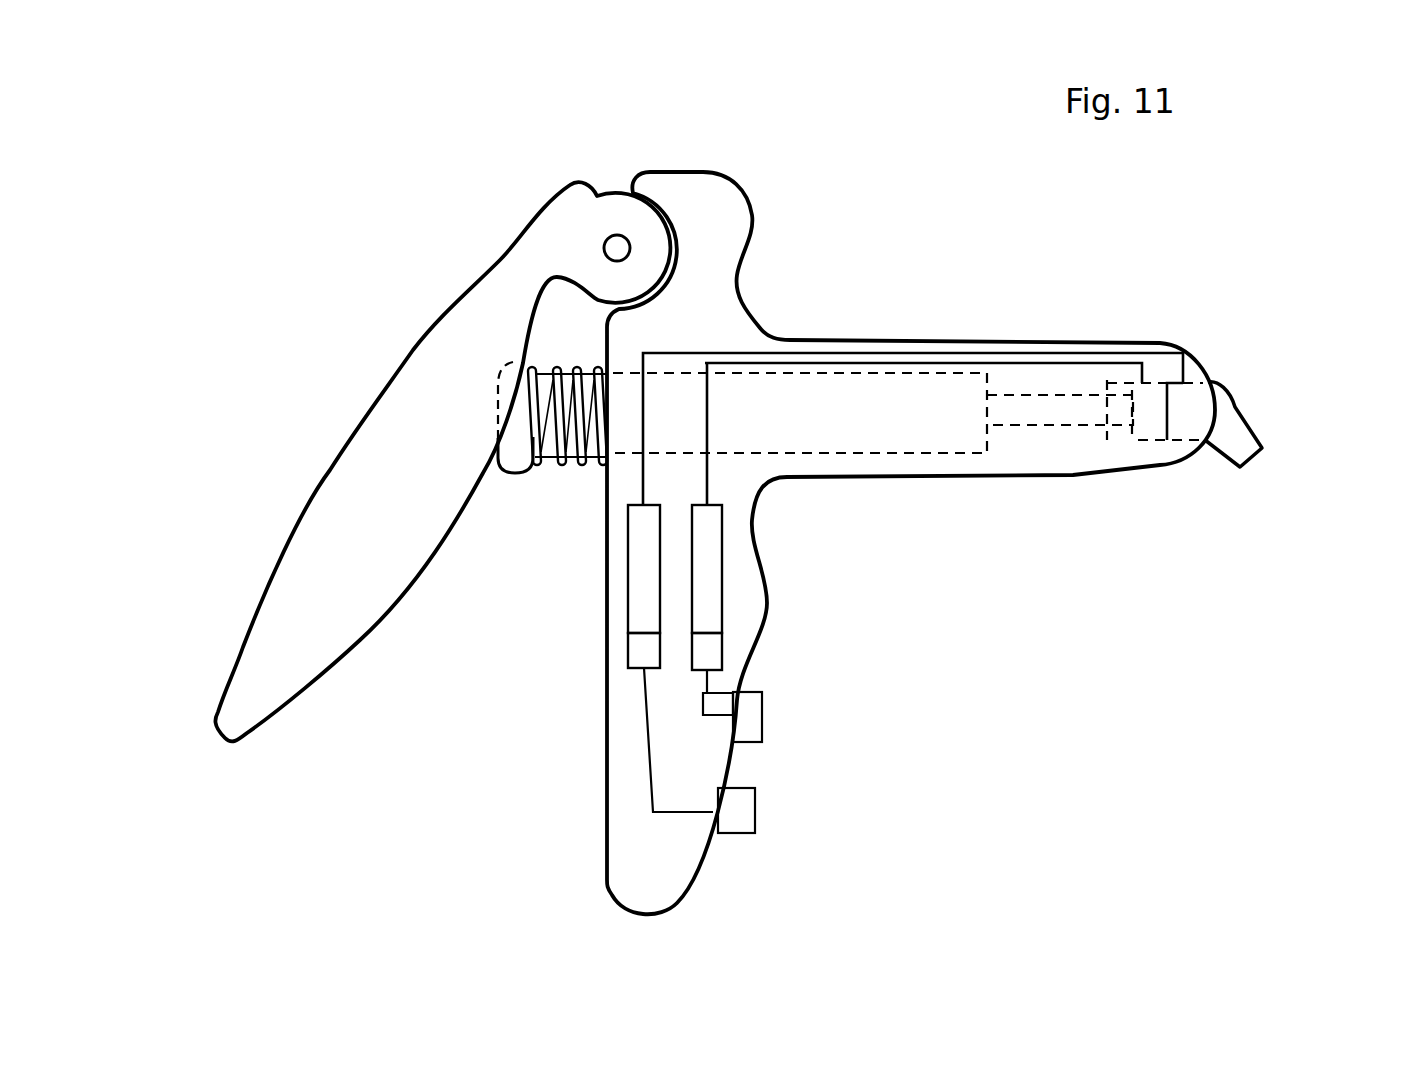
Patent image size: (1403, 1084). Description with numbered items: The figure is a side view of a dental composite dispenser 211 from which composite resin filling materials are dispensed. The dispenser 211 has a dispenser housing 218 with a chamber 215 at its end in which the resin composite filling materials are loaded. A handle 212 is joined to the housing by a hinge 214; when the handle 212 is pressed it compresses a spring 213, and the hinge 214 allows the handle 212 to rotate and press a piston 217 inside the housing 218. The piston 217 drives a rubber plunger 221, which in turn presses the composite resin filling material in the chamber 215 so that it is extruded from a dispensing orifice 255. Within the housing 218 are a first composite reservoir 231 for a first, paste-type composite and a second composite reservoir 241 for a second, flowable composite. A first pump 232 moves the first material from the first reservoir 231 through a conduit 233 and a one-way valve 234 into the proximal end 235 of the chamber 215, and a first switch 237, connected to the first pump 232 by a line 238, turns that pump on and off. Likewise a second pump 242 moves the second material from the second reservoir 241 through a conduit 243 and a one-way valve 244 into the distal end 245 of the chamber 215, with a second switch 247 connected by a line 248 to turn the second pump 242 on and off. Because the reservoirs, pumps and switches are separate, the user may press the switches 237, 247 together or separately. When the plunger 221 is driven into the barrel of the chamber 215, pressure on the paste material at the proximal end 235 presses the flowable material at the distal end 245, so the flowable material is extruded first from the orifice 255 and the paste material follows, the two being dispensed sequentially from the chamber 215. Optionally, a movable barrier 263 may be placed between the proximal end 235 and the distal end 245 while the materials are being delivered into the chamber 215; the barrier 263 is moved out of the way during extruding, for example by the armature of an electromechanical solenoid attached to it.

The dental composite dispenser 211 is at (327, 818).
The handle 212 is at (413, 383).
The spring 213 is at (577, 438).
The hinge 214 is at (617, 248).
The chamber 215 is at (1227, 432).
The piston 217 is at (815, 423).
The dispenser housing 218 is at (815, 338).
The rubber plunger 221 is at (1050, 417).
The first composite reservoir 231 is at (705, 553).
The first pump 232 is at (710, 653).
The conduit 233 is at (705, 475).
The one-way valve 234 is at (1138, 427).
The proximal end of the chamber 235 is at (1142, 383).
The first switch 237 is at (762, 715).
The line 238 is at (705, 693).
The second composite reservoir 241 is at (637, 567).
The second pump 242 is at (643, 652).
The conduit 243 is at (677, 353).
The one-way valve 244 is at (1183, 385).
The distal end of the chamber 245 is at (1193, 420).
The second switch 247 is at (755, 815).
The line 248 is at (647, 752).
The dispensing orifice 255 is at (1270, 466).
The movable barrier 263 is at (1167, 425).